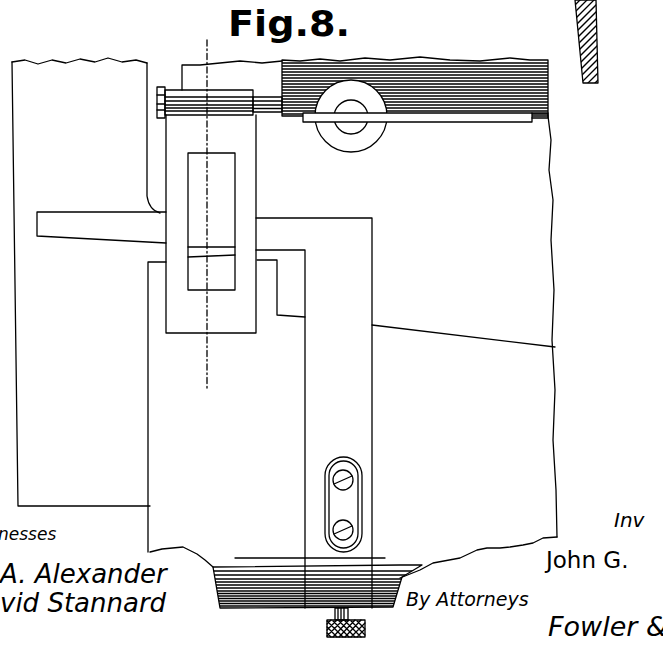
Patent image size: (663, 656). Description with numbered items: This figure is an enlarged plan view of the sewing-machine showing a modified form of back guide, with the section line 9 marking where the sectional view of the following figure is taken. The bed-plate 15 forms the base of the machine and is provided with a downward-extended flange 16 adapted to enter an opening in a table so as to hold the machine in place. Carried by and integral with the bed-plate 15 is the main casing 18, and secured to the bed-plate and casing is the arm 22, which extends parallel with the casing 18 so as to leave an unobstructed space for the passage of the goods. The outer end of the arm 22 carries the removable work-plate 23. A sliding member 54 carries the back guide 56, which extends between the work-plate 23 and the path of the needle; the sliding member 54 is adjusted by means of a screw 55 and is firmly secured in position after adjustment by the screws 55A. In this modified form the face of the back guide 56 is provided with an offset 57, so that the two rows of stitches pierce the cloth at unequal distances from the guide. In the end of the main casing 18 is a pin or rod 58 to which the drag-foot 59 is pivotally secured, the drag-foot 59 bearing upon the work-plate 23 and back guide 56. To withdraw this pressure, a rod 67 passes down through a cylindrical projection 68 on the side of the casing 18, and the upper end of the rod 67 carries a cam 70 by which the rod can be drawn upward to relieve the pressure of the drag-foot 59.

The section line 9- 9 is at (209, 208).
The bed-plate 15 is at (284, 304).
The downward-extended flange 16 is at (598, 28).
The main casing 18 is at (425, 72).
The arm 22 is at (463, 418).
The work-plate 23 is at (226, 429).
The sliding member 54 is at (314, 413).
The screw 55 is at (327, 626).
The securing screws 55A is at (348, 473).
The back guide 56 is at (110, 228).
The offset 57 is at (208, 210).
The pin or rod 58 is at (270, 107).
The drag-foot 59 is at (211, 224).
The rod 67 is at (348, 123).
The cylindrical projection 68 is at (371, 141).
The cam 70 is at (475, 115).